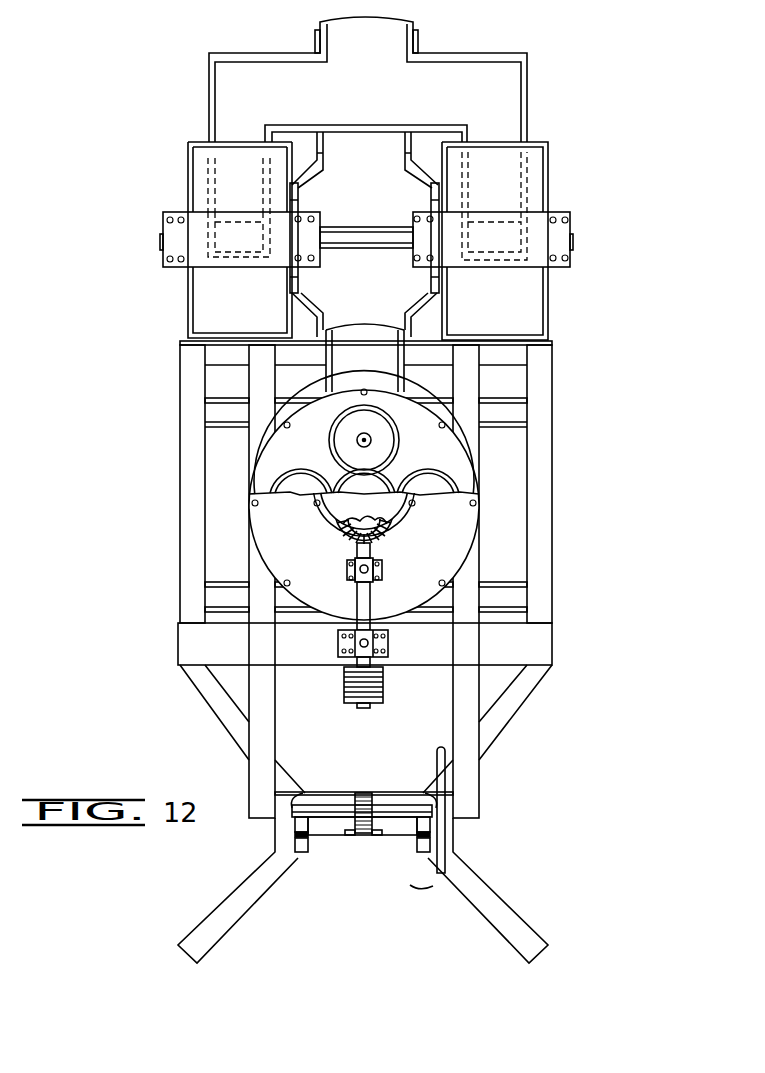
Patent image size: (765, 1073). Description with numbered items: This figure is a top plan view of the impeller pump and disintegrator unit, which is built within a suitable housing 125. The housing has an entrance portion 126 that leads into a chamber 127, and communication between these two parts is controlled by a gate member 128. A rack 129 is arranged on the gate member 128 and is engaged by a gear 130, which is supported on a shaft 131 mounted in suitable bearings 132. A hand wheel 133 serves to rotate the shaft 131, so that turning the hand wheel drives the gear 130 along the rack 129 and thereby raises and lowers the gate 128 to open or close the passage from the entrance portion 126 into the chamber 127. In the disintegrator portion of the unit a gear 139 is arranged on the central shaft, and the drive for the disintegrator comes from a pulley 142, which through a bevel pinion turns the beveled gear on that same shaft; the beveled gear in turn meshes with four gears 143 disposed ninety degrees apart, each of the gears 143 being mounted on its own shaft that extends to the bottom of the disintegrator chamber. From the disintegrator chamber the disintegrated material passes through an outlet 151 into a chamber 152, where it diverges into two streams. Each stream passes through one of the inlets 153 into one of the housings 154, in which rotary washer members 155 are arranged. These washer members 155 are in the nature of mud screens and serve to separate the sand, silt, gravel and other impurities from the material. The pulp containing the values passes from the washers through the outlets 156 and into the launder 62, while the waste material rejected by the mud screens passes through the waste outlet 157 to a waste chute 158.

The launder 62 is at (392, 37).
The housing 125 is at (542, 582).
The entrance portion 126 is at (452, 890).
The chamber 127 is at (497, 692).
The gate member 128 is at (390, 838).
The rack 129 is at (352, 838).
The gear 130 is at (352, 797).
The shaft 131 is at (312, 838).
The bearings 132 is at (303, 797).
The hand wheel 133 is at (447, 858).
The gear 139 is at (392, 477).
The pulley 142 is at (380, 690).
The gears 143 is at (447, 490).
The outlet 151 is at (360, 333).
The chamber 152 is at (335, 303).
The inlets 153 is at (433, 278).
The housings 154 is at (187, 302).
The rotary washer members 155 is at (198, 192).
The outlets 156 is at (237, 140).
The waste outlet 157 is at (433, 202).
The waste chute 158 is at (373, 142).